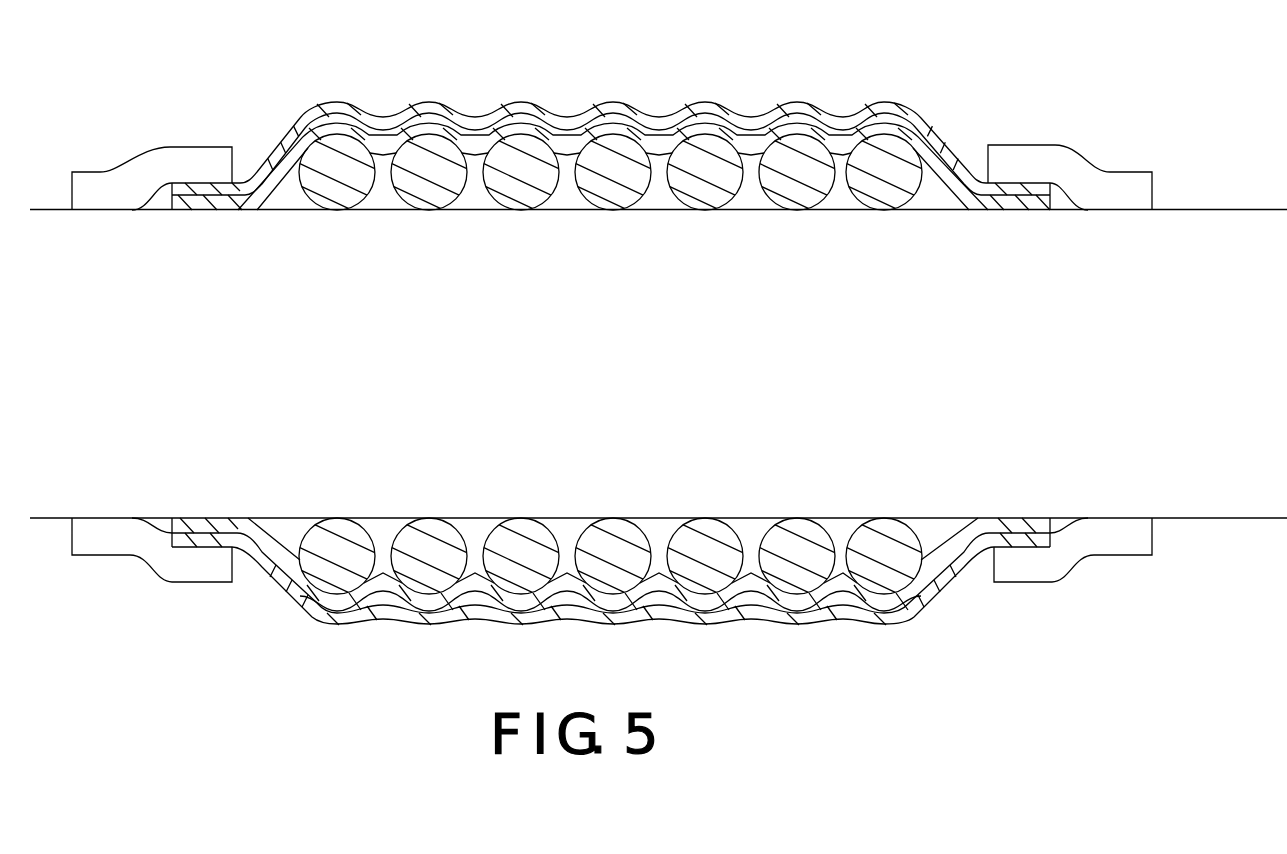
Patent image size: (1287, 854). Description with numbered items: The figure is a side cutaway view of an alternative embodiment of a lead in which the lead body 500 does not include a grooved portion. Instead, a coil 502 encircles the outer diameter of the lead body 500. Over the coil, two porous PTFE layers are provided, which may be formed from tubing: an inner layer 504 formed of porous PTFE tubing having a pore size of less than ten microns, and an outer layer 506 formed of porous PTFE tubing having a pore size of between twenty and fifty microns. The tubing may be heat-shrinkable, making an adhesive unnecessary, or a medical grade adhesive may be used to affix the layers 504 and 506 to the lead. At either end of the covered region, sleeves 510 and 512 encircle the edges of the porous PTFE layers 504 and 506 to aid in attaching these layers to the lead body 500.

The lead body 500 is at (1243, 208).
The coil 502 is at (802, 572).
The inner layer 504 is at (568, 148).
The layer 506 is at (657, 128).
The sleeve 510 is at (102, 188).
The sleeve 512 is at (1105, 183).